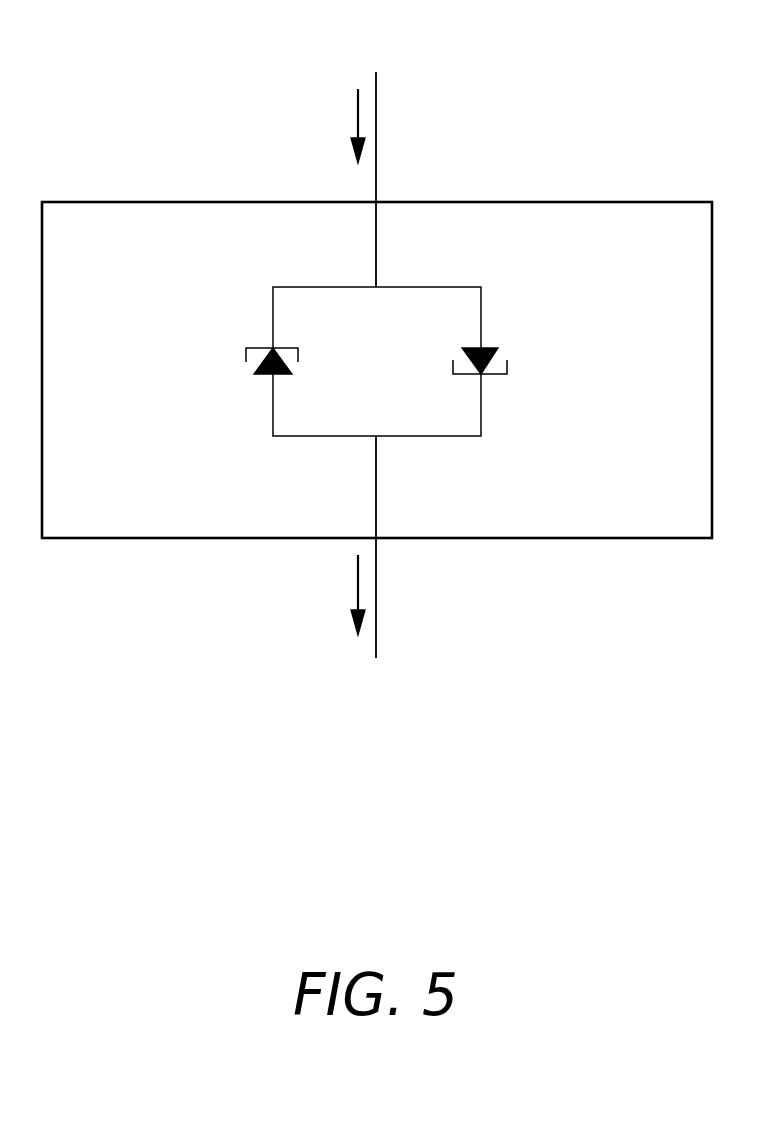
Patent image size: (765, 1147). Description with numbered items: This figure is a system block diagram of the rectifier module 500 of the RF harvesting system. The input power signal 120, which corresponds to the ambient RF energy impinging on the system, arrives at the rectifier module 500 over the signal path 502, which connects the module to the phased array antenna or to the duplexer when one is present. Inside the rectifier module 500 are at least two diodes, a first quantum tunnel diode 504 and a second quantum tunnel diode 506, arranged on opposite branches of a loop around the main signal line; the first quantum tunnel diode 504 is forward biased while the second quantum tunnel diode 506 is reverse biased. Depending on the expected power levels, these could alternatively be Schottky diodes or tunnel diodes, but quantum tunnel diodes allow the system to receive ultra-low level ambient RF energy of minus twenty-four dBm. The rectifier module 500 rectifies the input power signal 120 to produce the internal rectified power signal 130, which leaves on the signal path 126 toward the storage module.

The rectifier module 500 is at (693, 523).
The signal path 502 is at (376, 128).
The first quantum tunnel diode 504 is at (490, 360).
The second quantum tunnel diode 506 is at (247, 360).
The input power signal 120 is at (357, 115).
The signal path 126 is at (376, 565).
The internal rectified power signal 130 is at (353, 585).